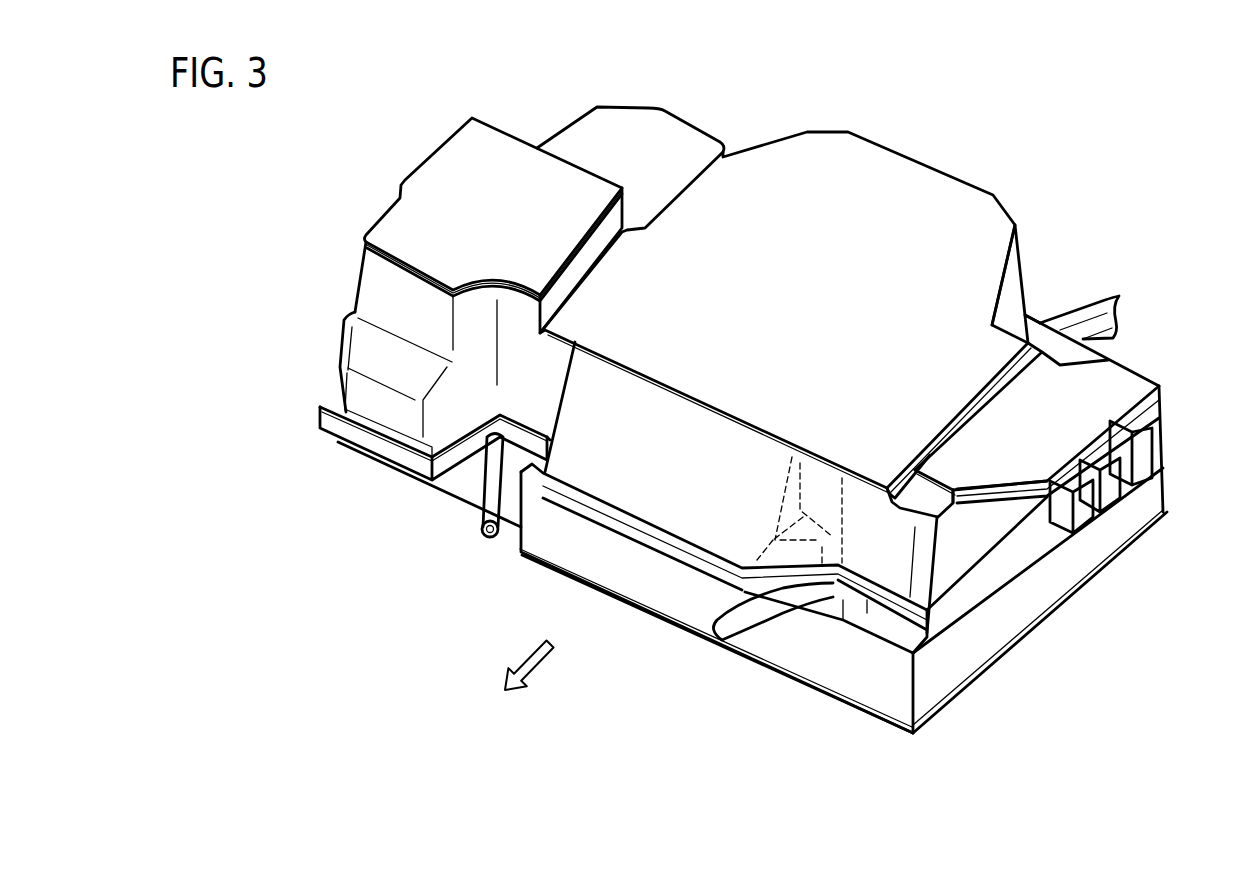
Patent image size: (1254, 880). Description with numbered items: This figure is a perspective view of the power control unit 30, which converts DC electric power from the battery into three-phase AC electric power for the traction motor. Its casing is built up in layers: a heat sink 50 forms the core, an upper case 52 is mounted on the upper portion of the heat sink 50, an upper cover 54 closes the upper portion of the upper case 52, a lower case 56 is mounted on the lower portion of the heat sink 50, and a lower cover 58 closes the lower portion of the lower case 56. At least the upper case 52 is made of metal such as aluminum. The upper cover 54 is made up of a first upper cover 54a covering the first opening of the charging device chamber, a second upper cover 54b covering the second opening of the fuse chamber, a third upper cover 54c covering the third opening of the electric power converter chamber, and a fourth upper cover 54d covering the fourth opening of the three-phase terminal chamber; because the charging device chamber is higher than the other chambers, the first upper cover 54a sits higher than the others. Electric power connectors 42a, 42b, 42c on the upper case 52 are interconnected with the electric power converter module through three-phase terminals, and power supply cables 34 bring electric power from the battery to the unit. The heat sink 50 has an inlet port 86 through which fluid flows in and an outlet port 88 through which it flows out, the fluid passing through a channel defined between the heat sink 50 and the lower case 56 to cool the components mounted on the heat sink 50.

The power control unit 30 is at (372, 100).
The power supply cables 34 is at (1077, 318).
The electric power connector 42a is at (1083, 517).
The electric power connector 42b is at (1120, 497).
The electric power connector 42c is at (1143, 463).
The heat sink 50 is at (335, 437).
The upper case 52 is at (368, 285).
The upper cover 54 is at (751, 162).
The first upper cover 54a is at (478, 135).
The second upper cover 54b is at (623, 123).
The third upper cover 54c is at (963, 202).
The fourth upper cover 54d is at (1127, 377).
The lower case 56 is at (1000, 633).
The lower cover 58 is at (878, 712).
The inlet port 86 is at (492, 502).
The outlet port 88 is at (745, 625).